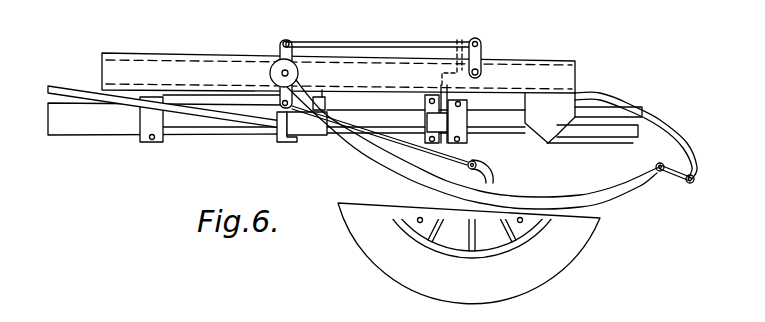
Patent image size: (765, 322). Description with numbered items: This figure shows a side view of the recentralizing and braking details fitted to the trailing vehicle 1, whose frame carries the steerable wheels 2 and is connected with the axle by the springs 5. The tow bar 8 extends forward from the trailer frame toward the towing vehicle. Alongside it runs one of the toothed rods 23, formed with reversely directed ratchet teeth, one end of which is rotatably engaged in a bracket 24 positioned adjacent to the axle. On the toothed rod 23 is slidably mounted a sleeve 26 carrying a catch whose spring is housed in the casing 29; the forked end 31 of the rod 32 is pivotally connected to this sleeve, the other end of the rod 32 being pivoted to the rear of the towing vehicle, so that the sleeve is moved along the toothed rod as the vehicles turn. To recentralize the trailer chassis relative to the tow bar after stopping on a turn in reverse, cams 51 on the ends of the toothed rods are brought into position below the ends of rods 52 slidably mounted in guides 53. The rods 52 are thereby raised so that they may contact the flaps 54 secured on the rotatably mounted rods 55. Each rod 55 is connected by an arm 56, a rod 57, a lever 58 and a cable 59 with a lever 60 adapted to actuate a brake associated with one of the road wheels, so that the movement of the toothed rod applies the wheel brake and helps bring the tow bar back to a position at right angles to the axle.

The trailing vehicle 1 is at (169, 70).
The steerable wheels 2 is at (563, 256).
The springs 5 is at (623, 183).
The tow bar 8 is at (102, 122).
The toothed rods 23 is at (194, 123).
The brackets 24 is at (470, 138).
The sleeve 26 is at (315, 128).
The casing 29 is at (320, 98).
The forked end 31 is at (280, 128).
The rod 32 is at (72, 92).
The cams 51 is at (428, 121).
The rods 52 is at (439, 88).
The guides 53 is at (463, 76).
The flaps 54 is at (455, 53).
The rods 55 is at (482, 72).
The arm 56 is at (482, 52).
The rod 57 is at (393, 43).
The lever 58 is at (284, 43).
The cable 59 is at (398, 140).
The lever 60 is at (486, 173).